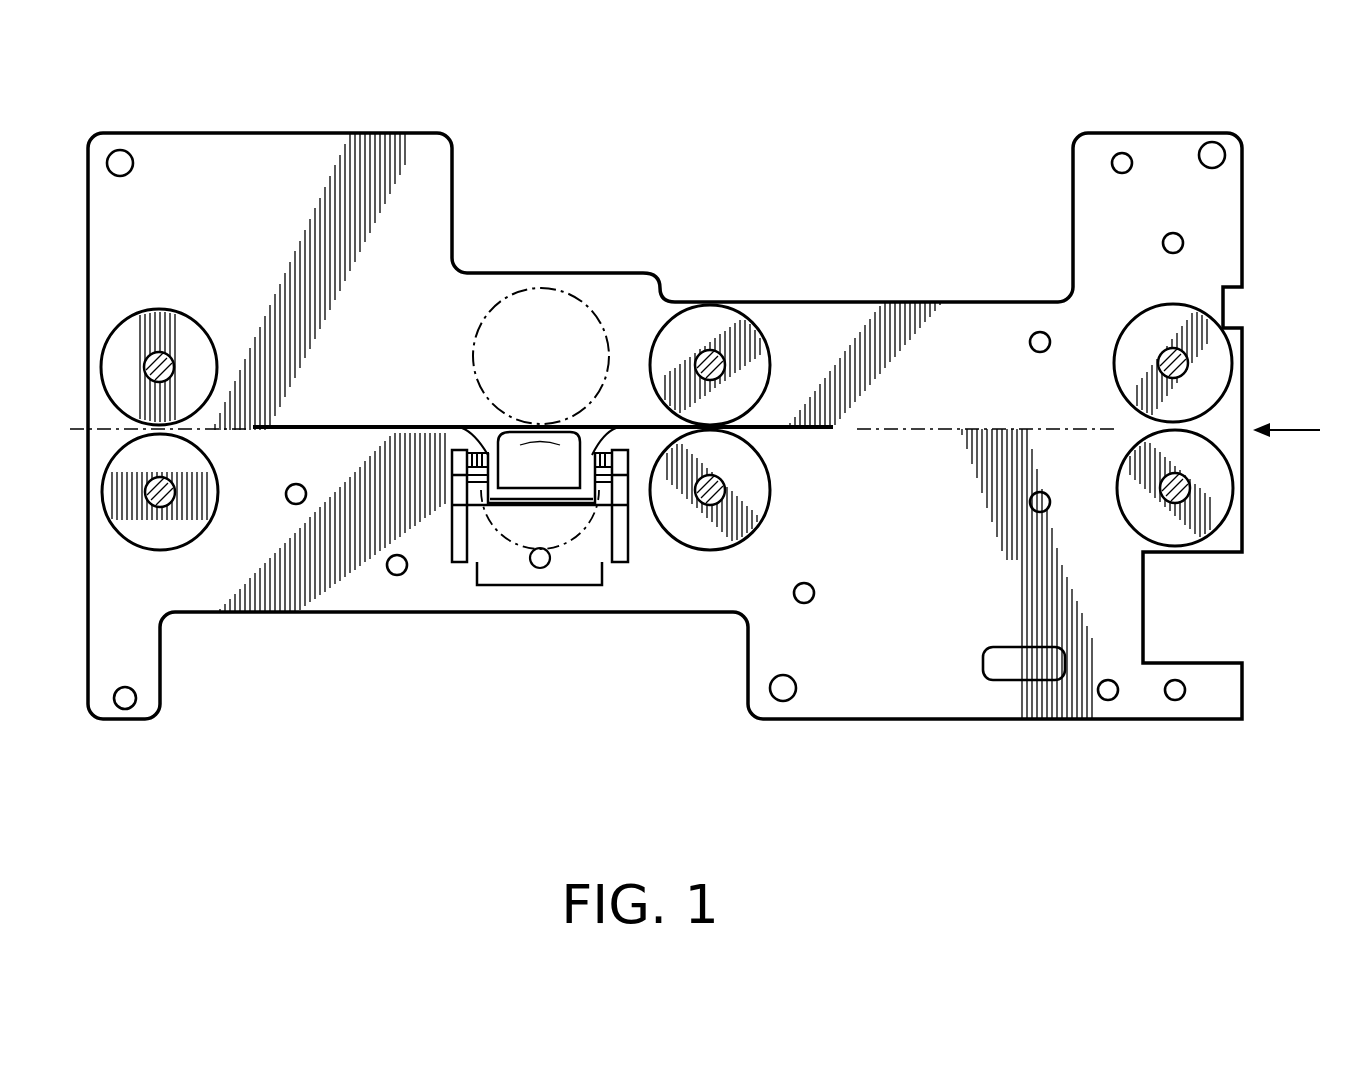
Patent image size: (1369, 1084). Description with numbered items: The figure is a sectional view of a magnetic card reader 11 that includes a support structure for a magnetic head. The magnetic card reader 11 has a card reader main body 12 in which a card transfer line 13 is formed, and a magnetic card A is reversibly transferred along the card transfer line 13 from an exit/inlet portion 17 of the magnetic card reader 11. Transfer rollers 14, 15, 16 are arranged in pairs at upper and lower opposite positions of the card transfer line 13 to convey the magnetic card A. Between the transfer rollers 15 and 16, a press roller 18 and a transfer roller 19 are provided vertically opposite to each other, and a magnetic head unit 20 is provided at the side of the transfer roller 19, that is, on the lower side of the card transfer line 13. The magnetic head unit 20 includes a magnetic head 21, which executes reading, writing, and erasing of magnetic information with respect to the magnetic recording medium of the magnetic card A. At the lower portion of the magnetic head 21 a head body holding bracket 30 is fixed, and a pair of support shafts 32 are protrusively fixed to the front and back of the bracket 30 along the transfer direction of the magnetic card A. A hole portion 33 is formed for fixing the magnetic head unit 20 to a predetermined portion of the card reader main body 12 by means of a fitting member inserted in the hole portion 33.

The magnetic card reader 11 is at (747, 192).
The card reader main body 12 is at (882, 320).
The card transfer line 13 is at (920, 430).
The transfer rollers 14 is at (1135, 320).
The transfer rollers 15 is at (770, 362).
The transfer rollers 16 is at (208, 328).
The exit/inlet portion 17 is at (1217, 427).
The press roller 18 is at (588, 322).
The transfer roller 19 is at (513, 540).
The magnetic head unit 20 is at (583, 596).
The magnetic head 21 is at (537, 447).
The head body holding bracket 30 is at (562, 493).
The support shafts 32 is at (470, 445).
The hole portion 33 is at (543, 568).
The magnetic card A is at (364, 426).